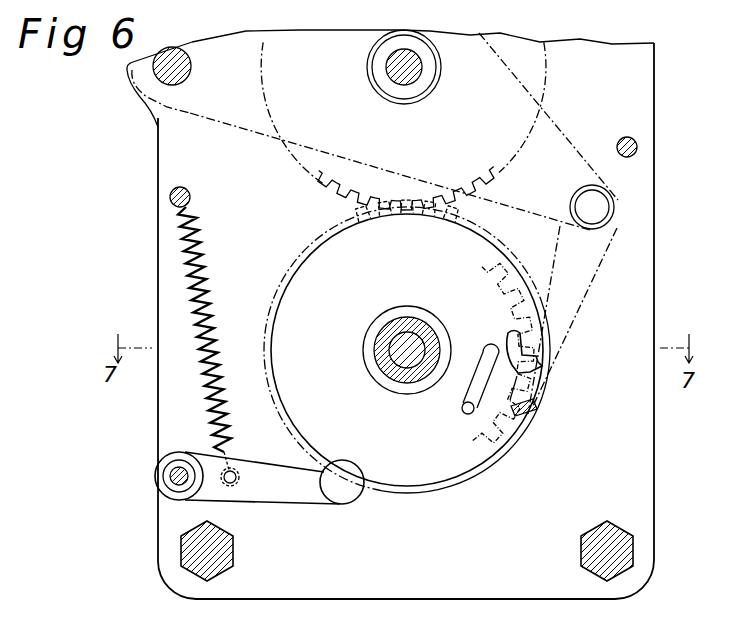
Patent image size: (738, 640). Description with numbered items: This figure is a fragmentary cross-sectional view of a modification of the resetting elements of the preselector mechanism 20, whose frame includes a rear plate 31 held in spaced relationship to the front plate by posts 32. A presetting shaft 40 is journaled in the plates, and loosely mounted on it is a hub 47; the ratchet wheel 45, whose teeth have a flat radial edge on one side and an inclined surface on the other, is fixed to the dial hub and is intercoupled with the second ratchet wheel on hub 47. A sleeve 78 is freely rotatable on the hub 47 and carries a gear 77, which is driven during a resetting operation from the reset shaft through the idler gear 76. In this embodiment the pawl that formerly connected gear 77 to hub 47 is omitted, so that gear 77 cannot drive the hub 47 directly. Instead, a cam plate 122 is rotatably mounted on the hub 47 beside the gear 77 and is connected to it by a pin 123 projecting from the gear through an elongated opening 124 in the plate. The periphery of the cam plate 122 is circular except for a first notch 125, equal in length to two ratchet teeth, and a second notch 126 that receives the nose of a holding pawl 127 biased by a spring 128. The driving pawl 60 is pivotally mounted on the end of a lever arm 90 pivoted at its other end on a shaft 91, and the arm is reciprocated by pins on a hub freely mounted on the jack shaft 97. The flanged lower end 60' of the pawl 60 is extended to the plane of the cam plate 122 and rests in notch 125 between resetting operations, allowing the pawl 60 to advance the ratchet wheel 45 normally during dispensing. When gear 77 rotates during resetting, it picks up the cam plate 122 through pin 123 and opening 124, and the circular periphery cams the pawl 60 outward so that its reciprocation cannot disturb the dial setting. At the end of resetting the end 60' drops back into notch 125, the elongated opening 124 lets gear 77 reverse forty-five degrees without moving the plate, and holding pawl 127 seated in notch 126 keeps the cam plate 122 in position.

The preselector mechanism 20 is at (652, 183).
The rear plate 31 is at (645, 90).
The posts 32 is at (183, 563).
The presetting shaft 40 is at (400, 334).
The ratchet wheel 45 is at (499, 461).
The hub 47 is at (419, 324).
The driving pawl 60 is at (576, 320).
The flanged end of driving pawl 60' is at (548, 394).
The idler gear 76 is at (324, 187).
The gear 77 is at (338, 222).
The sleeve 78 is at (369, 349).
The lever arm 90 is at (559, 131).
The shaft 91 is at (133, 88).
The jack shaft 97 is at (399, 75).
The cam plate 122 is at (433, 479).
The pin 123 is at (462, 413).
The elongated opening 124 is at (466, 387).
The first notch 125 is at (515, 342).
The second notch 126 is at (346, 463).
The holding pawl 127 is at (314, 495).
The spring 128 is at (207, 296).